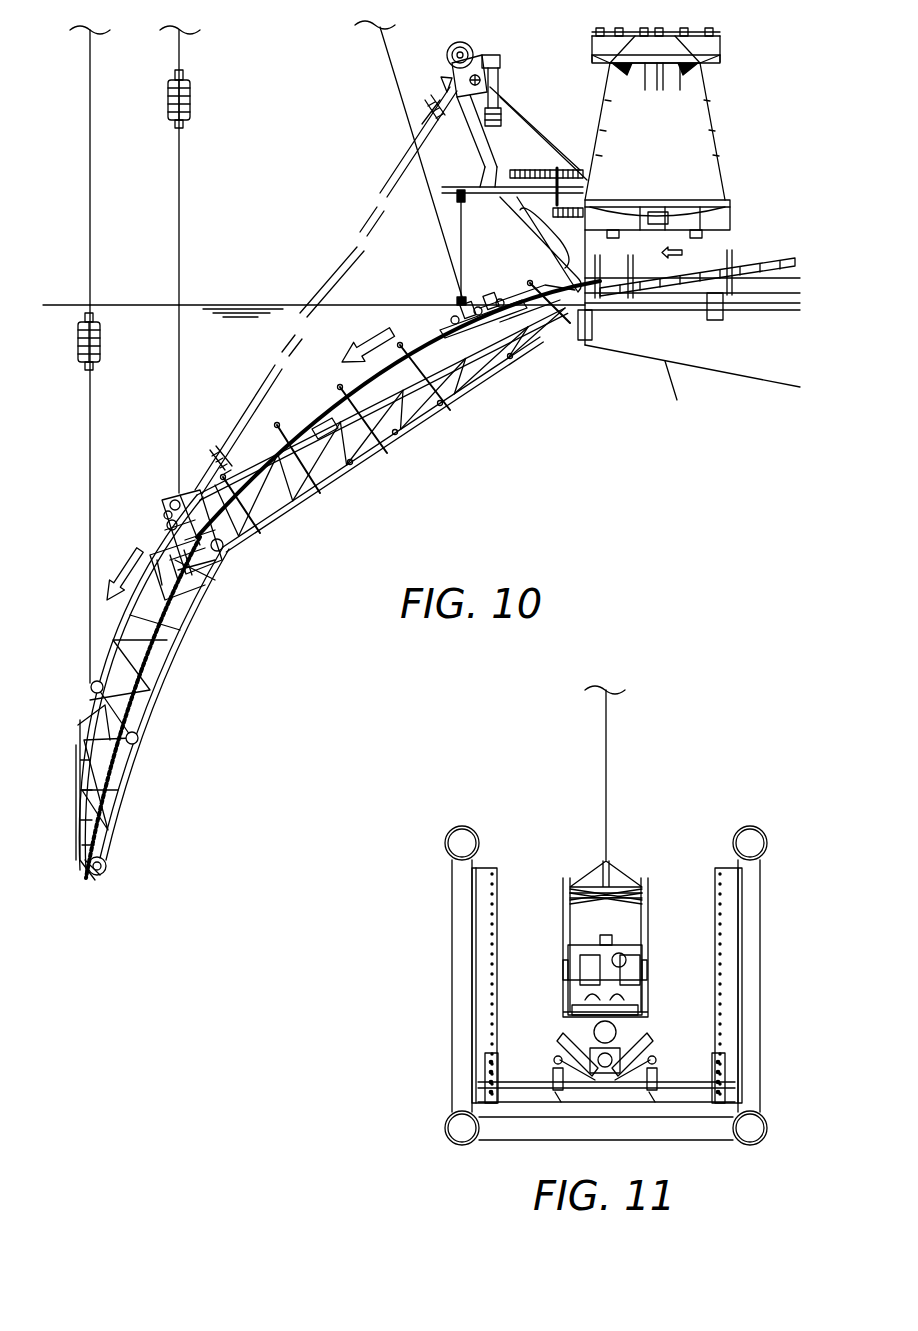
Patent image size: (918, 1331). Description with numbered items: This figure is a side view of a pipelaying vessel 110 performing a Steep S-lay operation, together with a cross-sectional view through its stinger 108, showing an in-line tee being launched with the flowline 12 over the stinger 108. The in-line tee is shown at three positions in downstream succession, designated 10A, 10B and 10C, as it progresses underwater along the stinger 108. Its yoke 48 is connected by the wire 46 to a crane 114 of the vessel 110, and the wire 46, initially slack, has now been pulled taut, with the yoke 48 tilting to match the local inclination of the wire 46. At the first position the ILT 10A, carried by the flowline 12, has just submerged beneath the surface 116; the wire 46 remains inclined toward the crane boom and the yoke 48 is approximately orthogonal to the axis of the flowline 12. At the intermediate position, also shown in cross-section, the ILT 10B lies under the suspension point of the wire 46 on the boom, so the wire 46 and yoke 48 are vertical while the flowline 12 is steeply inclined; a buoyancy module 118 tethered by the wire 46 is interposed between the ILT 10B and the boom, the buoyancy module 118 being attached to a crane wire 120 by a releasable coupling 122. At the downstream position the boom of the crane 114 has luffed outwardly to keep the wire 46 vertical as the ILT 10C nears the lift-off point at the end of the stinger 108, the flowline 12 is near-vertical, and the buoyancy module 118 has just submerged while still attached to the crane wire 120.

In FIG. 10, the ILT at first position 10A is at (437, 318).
In FIG. 10, the ILT at intermediate position 10B is at (220, 572).
In FIG. 11, the ILT at intermediate position 10B is at (545, 967).
In FIG. 10, the ILT at downstream position 10C is at (122, 828).
In FIG. 10, the flowline 12 is at (337, 410).
In FIG. 11, the flowline 12 is at (628, 1020).
In FIG. 10, the wire 46 is at (390, 73).
In FIG. 11, the wire 46 is at (607, 752).
In FIG. 10, the yoke 48 is at (460, 300).
In FIG. 11, the yoke 48 is at (592, 868).
In FIG. 10, the stinger 108 is at (425, 435).
In FIG. 11, the stinger 108 is at (752, 920).
In FIG. 10, the pipelaying vessel 110 is at (769, 354).
In FIG. 10, the crane 114 is at (677, 154).
In FIG. 10, the surface 116 is at (243, 305).
In FIG. 10, the buoyancy module 118 is at (190, 110).
In FIG. 10, the crane wire 120 is at (182, 52).
In FIG. 10, the releasable coupling 122 is at (184, 78).